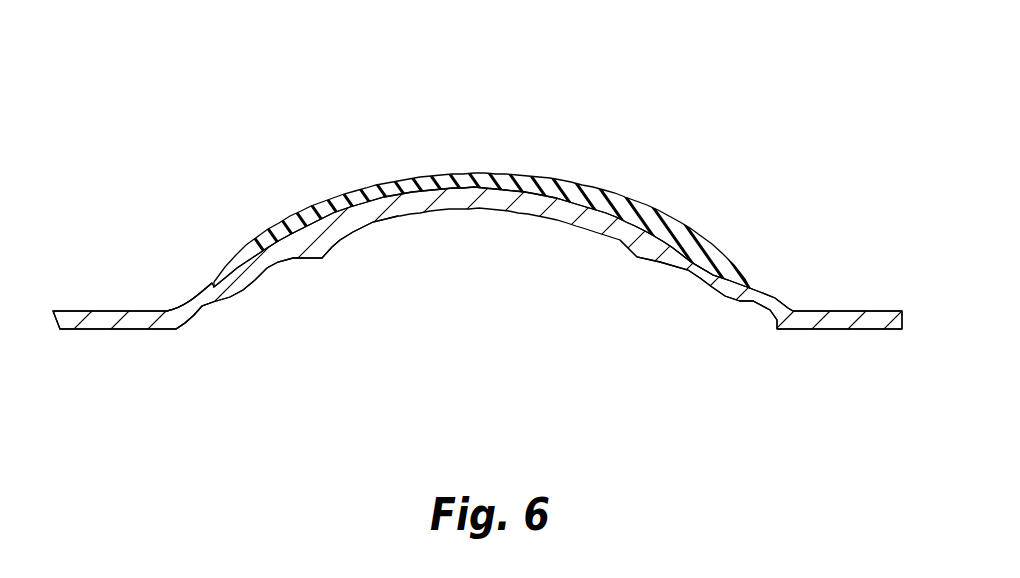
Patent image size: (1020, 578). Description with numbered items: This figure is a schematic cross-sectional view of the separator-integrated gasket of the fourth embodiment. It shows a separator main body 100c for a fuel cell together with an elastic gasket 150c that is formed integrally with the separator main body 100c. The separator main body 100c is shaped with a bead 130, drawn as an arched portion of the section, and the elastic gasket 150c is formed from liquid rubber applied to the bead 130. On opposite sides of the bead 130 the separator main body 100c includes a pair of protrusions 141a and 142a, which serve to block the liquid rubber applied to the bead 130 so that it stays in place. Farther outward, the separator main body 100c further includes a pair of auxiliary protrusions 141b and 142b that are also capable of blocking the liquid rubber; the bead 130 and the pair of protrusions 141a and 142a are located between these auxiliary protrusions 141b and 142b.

The separator main body 100c is at (108, 311).
The bead 130 is at (469, 265).
The elastic gasket 150c is at (539, 166).
The protrusion 141a is at (314, 306).
The auxiliary protrusion 141b is at (198, 300).
The protrusion 142a is at (697, 253).
The auxiliary protrusion 142b is at (820, 225).